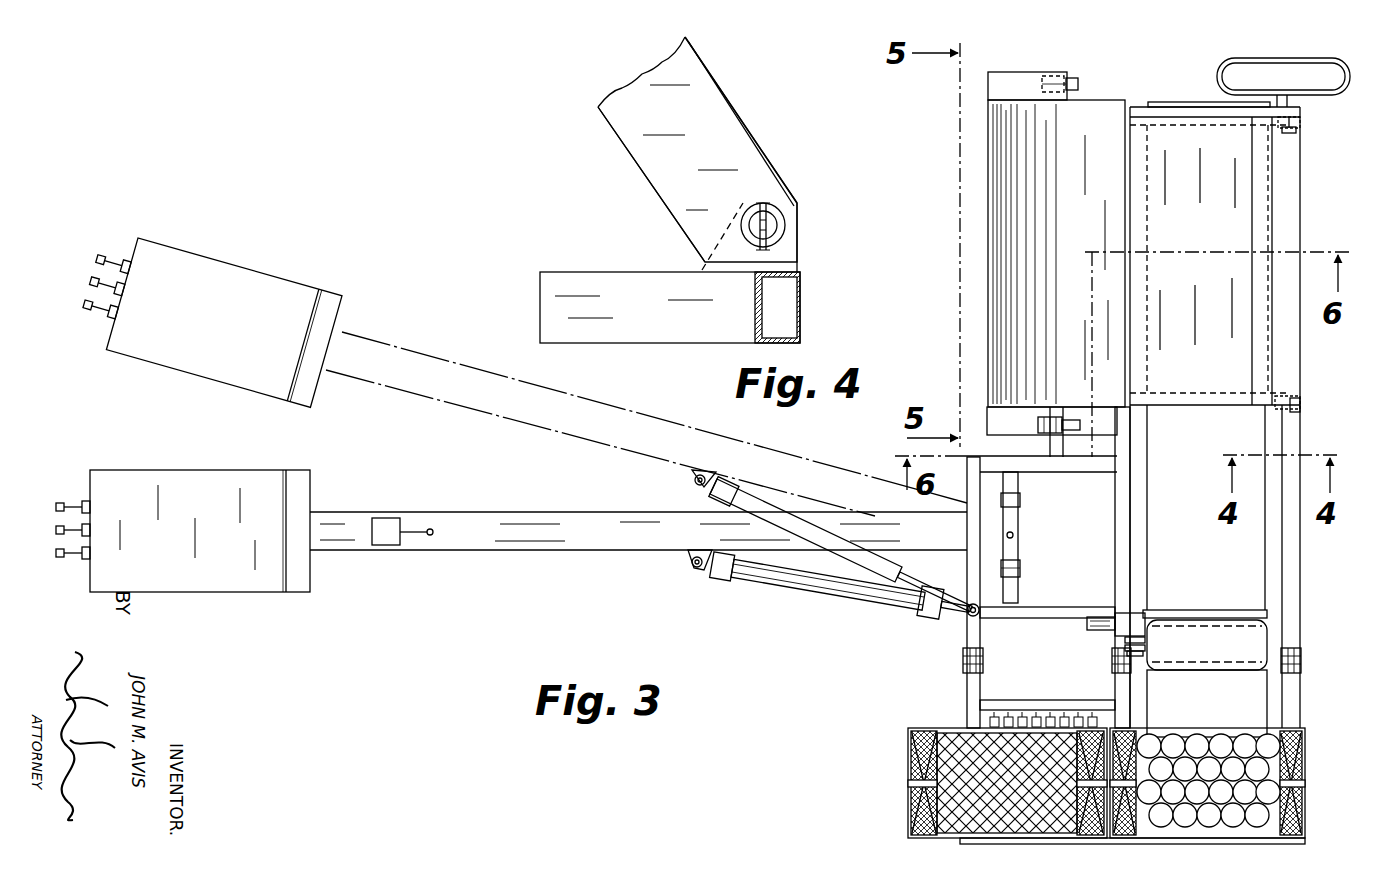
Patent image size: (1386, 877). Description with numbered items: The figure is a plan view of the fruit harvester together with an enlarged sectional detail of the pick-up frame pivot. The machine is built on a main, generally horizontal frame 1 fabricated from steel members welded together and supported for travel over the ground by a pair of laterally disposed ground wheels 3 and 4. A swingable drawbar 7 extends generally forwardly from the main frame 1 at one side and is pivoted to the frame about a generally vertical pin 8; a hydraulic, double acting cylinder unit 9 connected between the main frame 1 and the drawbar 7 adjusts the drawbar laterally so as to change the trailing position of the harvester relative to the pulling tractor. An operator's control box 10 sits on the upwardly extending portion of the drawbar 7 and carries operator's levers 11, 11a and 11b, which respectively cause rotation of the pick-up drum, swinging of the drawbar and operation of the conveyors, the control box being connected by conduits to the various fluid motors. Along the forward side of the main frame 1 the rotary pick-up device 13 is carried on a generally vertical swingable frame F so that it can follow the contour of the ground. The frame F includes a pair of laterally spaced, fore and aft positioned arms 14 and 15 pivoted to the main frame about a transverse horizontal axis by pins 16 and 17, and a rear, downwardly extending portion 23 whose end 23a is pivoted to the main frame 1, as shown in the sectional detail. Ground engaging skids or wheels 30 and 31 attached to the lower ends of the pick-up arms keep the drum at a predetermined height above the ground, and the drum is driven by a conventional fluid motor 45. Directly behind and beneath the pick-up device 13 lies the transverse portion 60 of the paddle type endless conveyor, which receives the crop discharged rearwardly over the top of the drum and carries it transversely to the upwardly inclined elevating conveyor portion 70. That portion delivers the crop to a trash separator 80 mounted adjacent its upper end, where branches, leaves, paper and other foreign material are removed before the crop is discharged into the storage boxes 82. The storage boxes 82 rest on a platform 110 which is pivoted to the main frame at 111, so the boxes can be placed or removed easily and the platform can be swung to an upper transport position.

In FIG. 3, the main frame 1 is at (968, 628).
In FIG. 4, the main frame 1 is at (801, 312).
In FIG. 3, the ground wheel 3 is at (1224, 60).
In FIG. 3, the ground wheel 4 is at (1275, 640).
In FIG. 3, the swingable drawbar 7 is at (497, 550).
In FIG. 3, the vertical pin 8 is at (1013, 536).
In FIG. 3, the hydraulic double acting cylinder unit 9 is at (832, 598).
In FIG. 3, the operator's control box 10 is at (189, 483).
In FIG. 3, the operator's lever 11 is at (82, 558).
In FIG. 3, the operator's lever 11a is at (77, 526).
In FIG. 3, the operator's lever 11b is at (79, 500).
In FIG. 3, the rotary pick-up device 13 is at (986, 164).
In FIG. 3, the arm 14 is at (1278, 399).
In FIG. 4, the arm 14 is at (636, 156).
In FIG. 3, the arm 15 is at (1286, 130).
In FIG. 3, the pin 16 is at (1300, 408).
In FIG. 4, the pin 16 is at (776, 222).
In FIG. 3, the pin 17 is at (1302, 122).
In FIG. 4, the rear downwardly extending portion 23 is at (667, 196).
In FIG. 4, the end 23a is at (800, 251).
In FIG. 3, the ground engaging skid or wheel 30 is at (1080, 425).
In FIG. 3, the ground engaging skid or wheel 31 is at (1080, 84).
In FIG. 3, the fluid motor 45 is at (1062, 447).
In FIG. 3, the transverse conveyor portion 60 is at (1240, 232).
In FIG. 3, the elevating conveyor portion 70 is at (1255, 588).
In FIG. 3, the trash separator 80 is at (1272, 690).
In FIG. 3, the storage box 82 is at (912, 806).
In FIG. 3, the platform 110 is at (970, 684).
In FIG. 3, the pivot 111 is at (984, 660).
In FIG. 3, the swingable frame F is at (1302, 203).
In FIG. 4, the swingable frame F is at (748, 121).